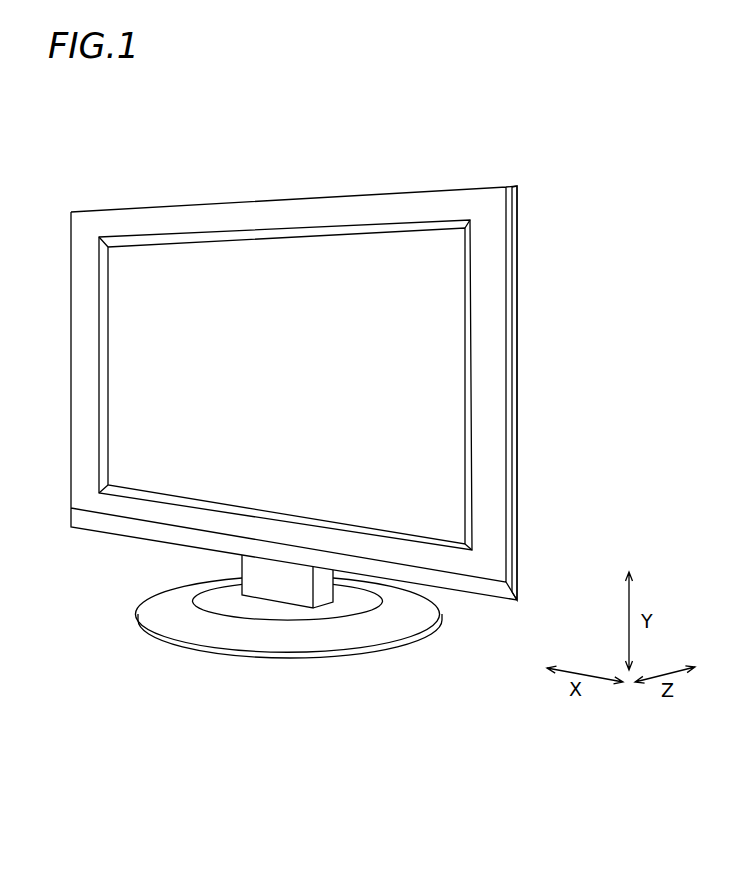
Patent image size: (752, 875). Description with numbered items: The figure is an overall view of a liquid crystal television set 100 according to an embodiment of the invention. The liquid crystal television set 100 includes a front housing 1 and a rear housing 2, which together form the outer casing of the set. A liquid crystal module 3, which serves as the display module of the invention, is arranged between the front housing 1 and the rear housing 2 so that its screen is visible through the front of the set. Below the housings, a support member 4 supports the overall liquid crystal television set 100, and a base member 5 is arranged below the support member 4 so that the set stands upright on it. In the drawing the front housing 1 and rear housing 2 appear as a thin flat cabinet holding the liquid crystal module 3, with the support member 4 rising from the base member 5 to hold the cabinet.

The liquid crystal television set 100 is at (512, 140).
The front housing 1 is at (508, 277).
The rear housing 2 is at (513, 305).
The liquid crystal module 3 is at (272, 262).
The support member 4 is at (275, 595).
The base member 5 is at (367, 627).